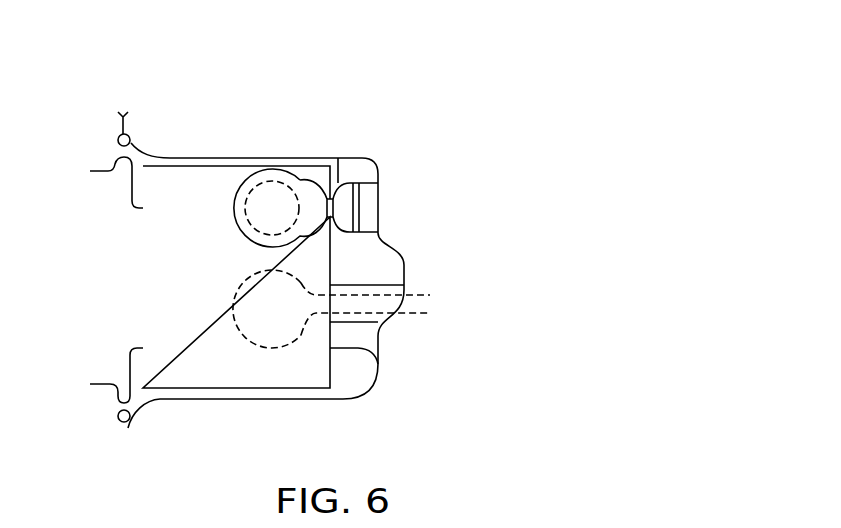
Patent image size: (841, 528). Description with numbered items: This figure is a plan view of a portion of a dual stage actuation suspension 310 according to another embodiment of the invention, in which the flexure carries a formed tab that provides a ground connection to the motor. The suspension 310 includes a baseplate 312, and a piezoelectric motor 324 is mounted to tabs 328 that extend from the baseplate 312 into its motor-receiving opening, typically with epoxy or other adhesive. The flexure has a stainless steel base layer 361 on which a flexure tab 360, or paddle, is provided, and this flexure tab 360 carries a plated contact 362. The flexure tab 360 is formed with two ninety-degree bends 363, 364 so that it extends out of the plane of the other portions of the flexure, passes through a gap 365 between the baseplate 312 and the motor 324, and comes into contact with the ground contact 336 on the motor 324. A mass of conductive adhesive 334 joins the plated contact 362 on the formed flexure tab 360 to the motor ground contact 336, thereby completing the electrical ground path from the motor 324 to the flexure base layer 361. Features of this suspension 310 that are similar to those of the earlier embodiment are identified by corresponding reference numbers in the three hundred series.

The suspension 310 is at (450, 167).
The baseplate 312 is at (308, 420).
The motor 324 is at (230, 375).
The tabs 328 is at (136, 368).
The conductive adhesive 334 is at (243, 228).
The ground contact 336 is at (228, 190).
The flexure tab 360 is at (286, 205).
The stainless steel base layer 361 is at (367, 222).
The plated contact 362 is at (270, 200).
The bend 363 is at (355, 233).
The bend 364 is at (353, 183).
The gap 365 is at (367, 172).